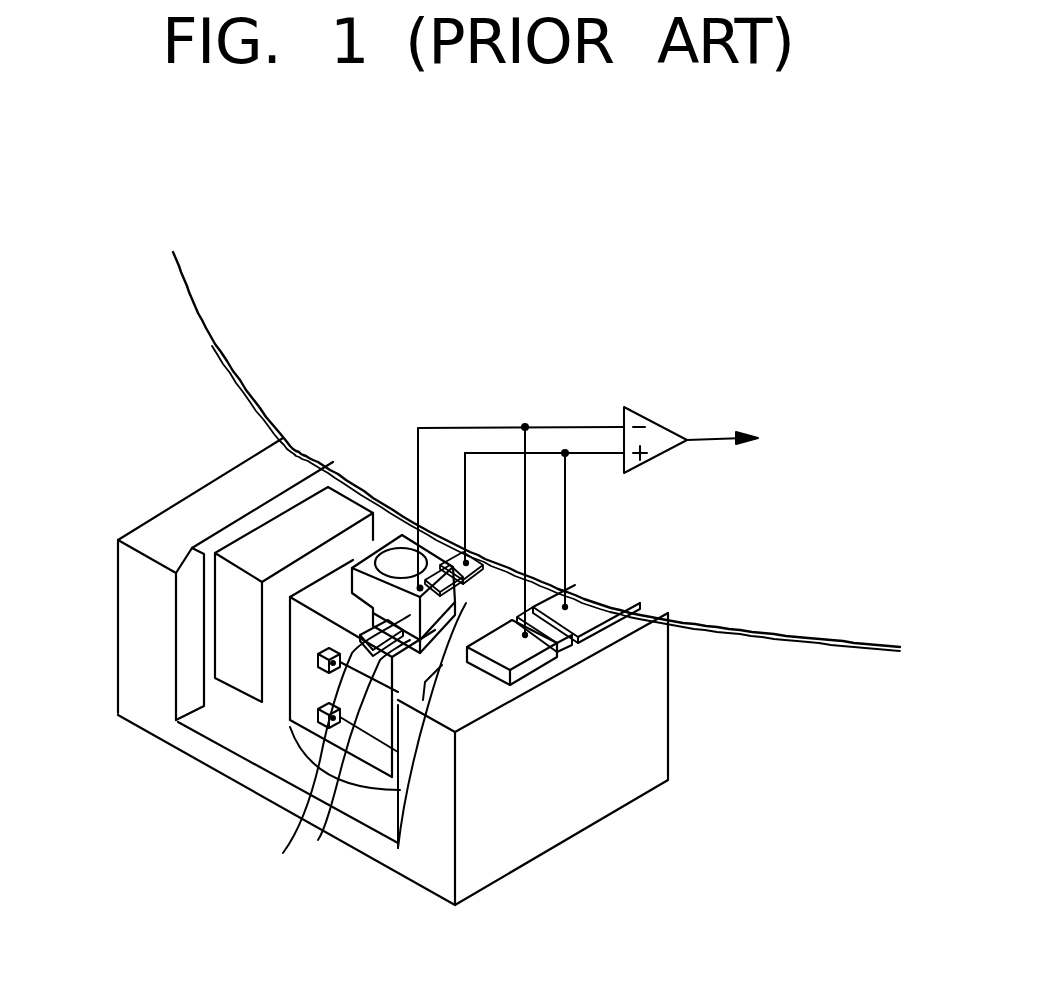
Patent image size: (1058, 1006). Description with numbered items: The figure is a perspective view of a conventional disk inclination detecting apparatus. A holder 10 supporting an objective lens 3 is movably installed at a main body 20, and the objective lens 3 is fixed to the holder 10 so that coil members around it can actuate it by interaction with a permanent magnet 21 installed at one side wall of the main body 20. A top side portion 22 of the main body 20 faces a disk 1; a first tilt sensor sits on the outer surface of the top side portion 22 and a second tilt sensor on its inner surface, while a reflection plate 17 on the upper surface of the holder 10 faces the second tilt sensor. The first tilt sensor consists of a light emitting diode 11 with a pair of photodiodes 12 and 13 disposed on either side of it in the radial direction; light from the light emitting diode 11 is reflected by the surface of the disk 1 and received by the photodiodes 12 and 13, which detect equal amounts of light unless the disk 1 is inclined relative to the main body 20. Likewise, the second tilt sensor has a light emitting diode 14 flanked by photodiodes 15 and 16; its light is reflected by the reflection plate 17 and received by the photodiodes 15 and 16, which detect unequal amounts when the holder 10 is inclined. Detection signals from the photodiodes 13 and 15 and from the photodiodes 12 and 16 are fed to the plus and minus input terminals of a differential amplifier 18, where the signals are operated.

The disk 1 is at (718, 612).
The objective lens 3 is at (393, 553).
The holder 10 is at (303, 643).
The light emitting diode 11 is at (568, 655).
The photodiode 12 is at (513, 657).
The photodiode 13 is at (587, 613).
The light emitting diode 14 is at (441, 598).
The photodiode 15 is at (466, 562).
The photodiode 16 is at (345, 735).
The reflection plate 17 is at (331, 752).
The differential amplifier 18 is at (657, 458).
The main body 20 is at (118, 617).
The permanent magnet 21 is at (238, 620).
The top side portion 22 is at (398, 845).